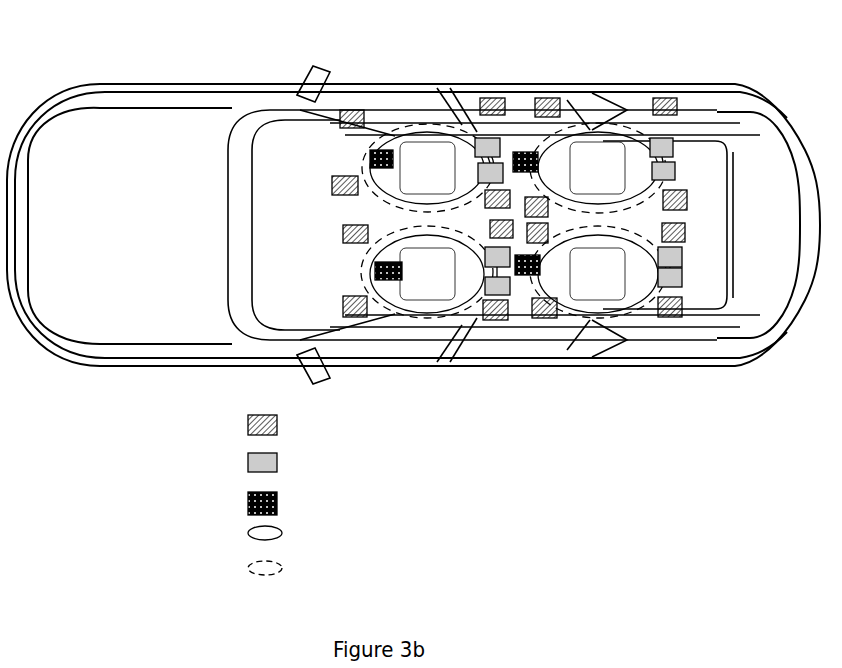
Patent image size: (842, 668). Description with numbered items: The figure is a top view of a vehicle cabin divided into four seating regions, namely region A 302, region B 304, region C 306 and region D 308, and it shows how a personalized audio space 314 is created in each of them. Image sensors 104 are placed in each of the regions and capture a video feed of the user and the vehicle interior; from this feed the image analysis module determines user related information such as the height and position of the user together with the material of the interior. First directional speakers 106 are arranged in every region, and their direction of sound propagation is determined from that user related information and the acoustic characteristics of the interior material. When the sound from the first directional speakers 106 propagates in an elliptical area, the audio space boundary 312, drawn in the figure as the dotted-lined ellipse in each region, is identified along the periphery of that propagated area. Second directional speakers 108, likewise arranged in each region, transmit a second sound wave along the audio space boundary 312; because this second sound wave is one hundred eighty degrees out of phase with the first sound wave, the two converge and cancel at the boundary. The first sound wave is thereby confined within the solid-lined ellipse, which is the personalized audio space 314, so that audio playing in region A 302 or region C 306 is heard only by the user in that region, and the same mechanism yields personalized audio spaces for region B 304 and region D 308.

The region A 302 is at (434, 119).
The region B 304 is at (418, 309).
The region C 306 is at (610, 115).
The region D 308 is at (596, 309).
The second directional speakers 108 is at (467, 266).
The first directional speakers 106 is at (465, 305).
The image sensors 104 is at (394, 332).
The personalized audio space 314 is at (394, 533).
The audio space boundary 312 is at (382, 570).